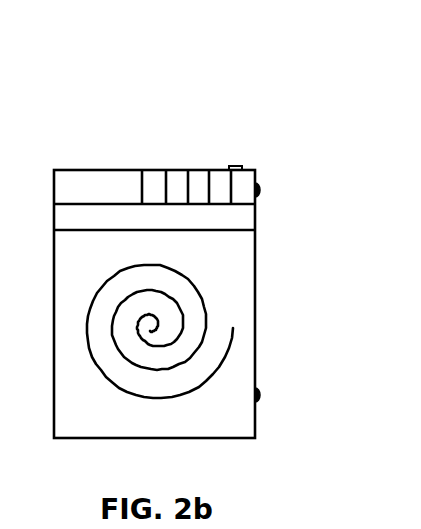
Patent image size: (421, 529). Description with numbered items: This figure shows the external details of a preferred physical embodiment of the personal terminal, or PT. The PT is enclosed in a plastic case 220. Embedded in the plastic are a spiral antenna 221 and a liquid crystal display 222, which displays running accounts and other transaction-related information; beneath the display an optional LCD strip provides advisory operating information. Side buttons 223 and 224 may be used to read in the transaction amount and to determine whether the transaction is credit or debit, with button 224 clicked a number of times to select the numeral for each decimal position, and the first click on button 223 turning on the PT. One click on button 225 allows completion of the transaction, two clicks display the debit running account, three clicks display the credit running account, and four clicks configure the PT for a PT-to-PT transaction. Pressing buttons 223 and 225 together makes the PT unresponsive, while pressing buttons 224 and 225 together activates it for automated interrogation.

The plastic case 220 is at (255, 273).
The spiral antenna 221 is at (125, 265).
The liquid crystal display 222 is at (187, 170).
The side button 223 is at (236, 166).
The side button 224 is at (260, 190).
The button 225 is at (260, 396).